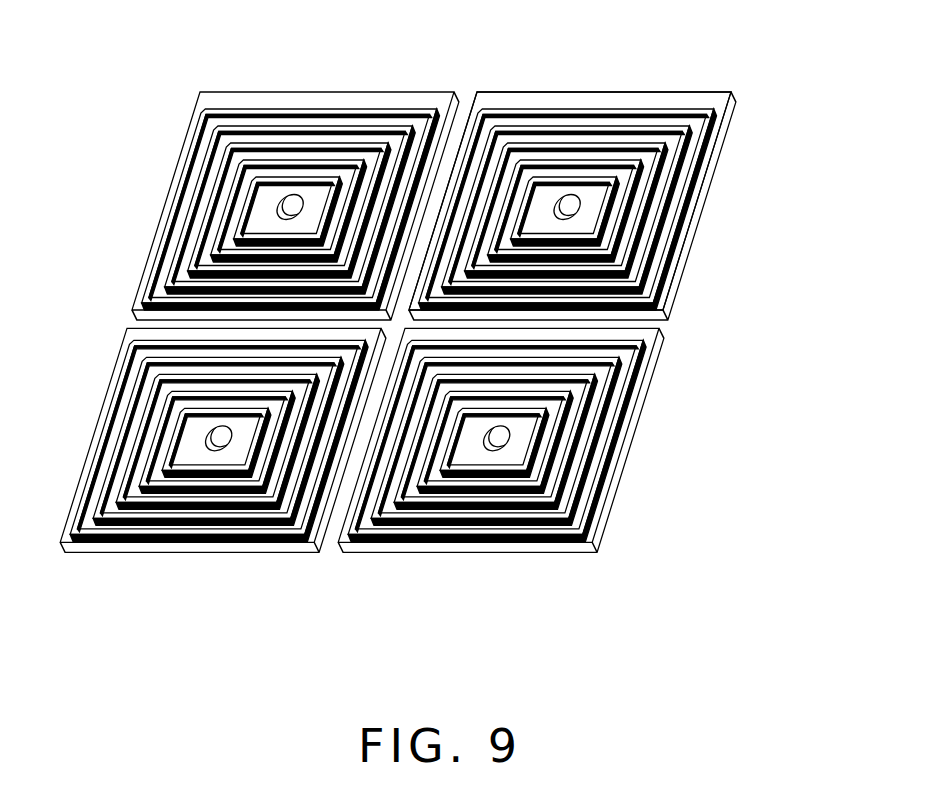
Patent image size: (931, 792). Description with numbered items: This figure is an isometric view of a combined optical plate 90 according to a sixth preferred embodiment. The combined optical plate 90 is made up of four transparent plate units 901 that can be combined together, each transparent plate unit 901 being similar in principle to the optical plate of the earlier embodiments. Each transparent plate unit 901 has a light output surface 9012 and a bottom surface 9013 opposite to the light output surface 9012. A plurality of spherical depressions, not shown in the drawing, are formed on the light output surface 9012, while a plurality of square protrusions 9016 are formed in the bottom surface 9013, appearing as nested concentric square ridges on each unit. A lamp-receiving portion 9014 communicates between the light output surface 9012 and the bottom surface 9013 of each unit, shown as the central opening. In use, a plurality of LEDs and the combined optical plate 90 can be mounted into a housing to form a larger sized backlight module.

The combined optical plate 90 is at (90, 64).
The transparent plate unit 901 is at (827, 105).
The light output surface 9012 is at (702, 227).
The bottom surface 9013 is at (702, 168).
The lamp-receiving portion 9014 is at (568, 213).
The square protrusion 9016 is at (703, 130).